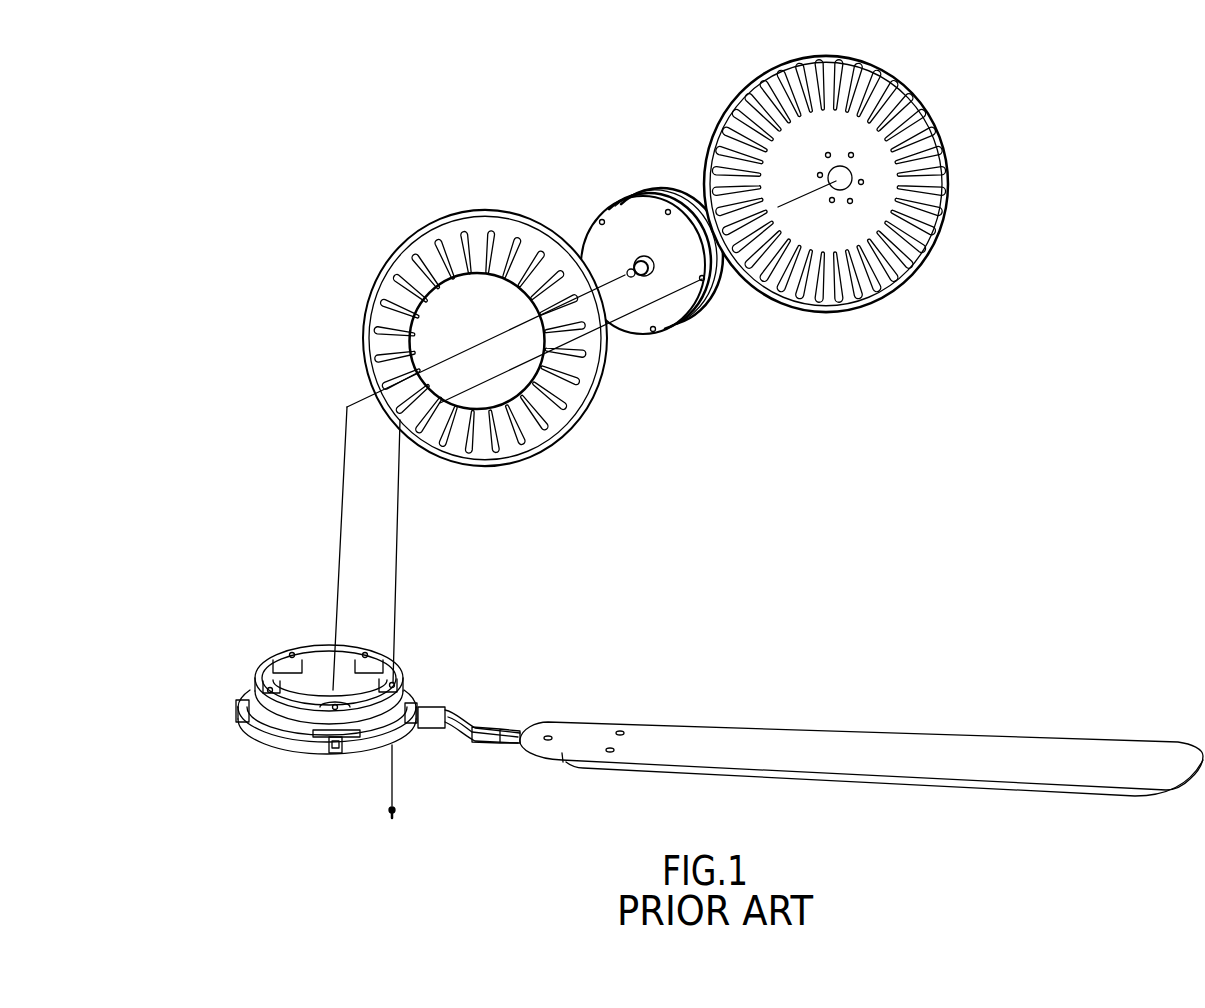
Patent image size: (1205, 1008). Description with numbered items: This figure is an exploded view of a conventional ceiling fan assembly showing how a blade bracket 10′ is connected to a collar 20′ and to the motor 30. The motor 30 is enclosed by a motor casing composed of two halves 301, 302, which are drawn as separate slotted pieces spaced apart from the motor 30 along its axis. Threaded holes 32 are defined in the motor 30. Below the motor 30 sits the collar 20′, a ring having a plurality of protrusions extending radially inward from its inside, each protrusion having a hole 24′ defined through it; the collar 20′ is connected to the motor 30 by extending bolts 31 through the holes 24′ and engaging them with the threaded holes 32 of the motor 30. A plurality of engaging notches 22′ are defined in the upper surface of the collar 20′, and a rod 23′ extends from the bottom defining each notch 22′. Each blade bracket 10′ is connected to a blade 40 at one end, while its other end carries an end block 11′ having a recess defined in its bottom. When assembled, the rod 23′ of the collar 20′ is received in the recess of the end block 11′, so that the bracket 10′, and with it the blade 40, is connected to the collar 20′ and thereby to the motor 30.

The motor casing half 301 is at (887, 73).
The motor 30 is at (632, 196).
The threaded hole 32 is at (720, 292).
The motor casing half 302 is at (540, 442).
The hole 24′ is at (393, 678).
The collar 20′ is at (391, 636).
The engaging notch 22′ is at (318, 734).
The rod 23′ is at (332, 754).
The bolt 31 is at (397, 812).
The end block 11′ is at (430, 707).
The blade bracket 10′ is at (510, 723).
The blade 40 is at (838, 728).